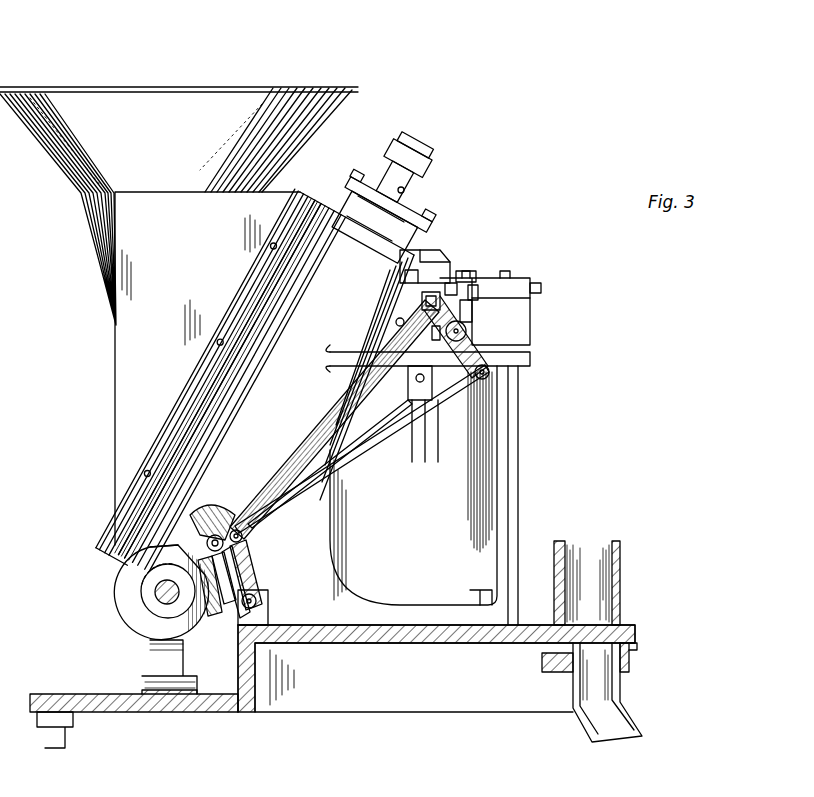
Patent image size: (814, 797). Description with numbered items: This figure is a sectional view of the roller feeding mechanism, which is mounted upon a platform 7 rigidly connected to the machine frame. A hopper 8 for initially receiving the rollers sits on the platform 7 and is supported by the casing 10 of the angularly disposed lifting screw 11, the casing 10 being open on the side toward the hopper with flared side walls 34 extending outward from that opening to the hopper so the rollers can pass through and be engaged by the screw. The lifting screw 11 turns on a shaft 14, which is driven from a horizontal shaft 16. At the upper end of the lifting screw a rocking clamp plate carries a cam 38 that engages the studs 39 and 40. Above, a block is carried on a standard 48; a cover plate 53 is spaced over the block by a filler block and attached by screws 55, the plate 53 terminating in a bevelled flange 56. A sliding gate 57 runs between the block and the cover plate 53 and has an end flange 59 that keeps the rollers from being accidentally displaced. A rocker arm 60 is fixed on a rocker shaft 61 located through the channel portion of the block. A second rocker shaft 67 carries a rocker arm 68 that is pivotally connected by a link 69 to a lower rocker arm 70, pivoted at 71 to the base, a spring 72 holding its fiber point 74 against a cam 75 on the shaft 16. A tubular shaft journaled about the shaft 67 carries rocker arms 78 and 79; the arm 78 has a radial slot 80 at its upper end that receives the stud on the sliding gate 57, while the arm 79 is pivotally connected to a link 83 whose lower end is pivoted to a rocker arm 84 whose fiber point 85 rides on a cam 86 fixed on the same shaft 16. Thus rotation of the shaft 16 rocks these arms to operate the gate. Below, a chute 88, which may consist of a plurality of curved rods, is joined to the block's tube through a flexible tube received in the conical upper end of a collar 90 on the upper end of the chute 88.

The hopper 8 is at (100, 230).
The casing 10 is at (255, 380).
The flared side walls 34 is at (175, 418).
The stud 40 is at (357, 190).
The stud 39 is at (432, 215).
The shaft 14 is at (420, 192).
The cam 38 is at (420, 250).
The bevelled flange 56 is at (435, 270).
The rocker arm 60 is at (422, 280).
The cover plate 53 is at (523, 278).
The screws 55 is at (473, 272).
The end flange 59 is at (452, 282).
The sliding gate 57 is at (541, 288).
The radial slot 80 is at (478, 297).
The rocker arm 78 is at (472, 314).
The rocker shaft 61 is at (401, 319).
The rocker shaft 67 is at (466, 330).
The rocker arm 79 is at (443, 338).
The rocker arm 68 is at (492, 360).
The standard 48 is at (512, 426).
The collar 90 is at (412, 380).
The chute 88 is at (412, 455).
The link 83 is at (332, 426).
The link 69 is at (382, 450).
The rocker arm 84 is at (300, 548).
The fiber point 85 is at (226, 514).
The lifting screw 11 is at (238, 525).
The lower rocker arm 70 is at (262, 548).
The spring 72 is at (250, 562).
The pivot 71 is at (262, 601).
The cam 75 is at (130, 590).
The horizontal shaft 16 is at (162, 626).
The cam 86 is at (214, 616).
The fiber point 74 is at (233, 610).
The platform 7 is at (445, 690).